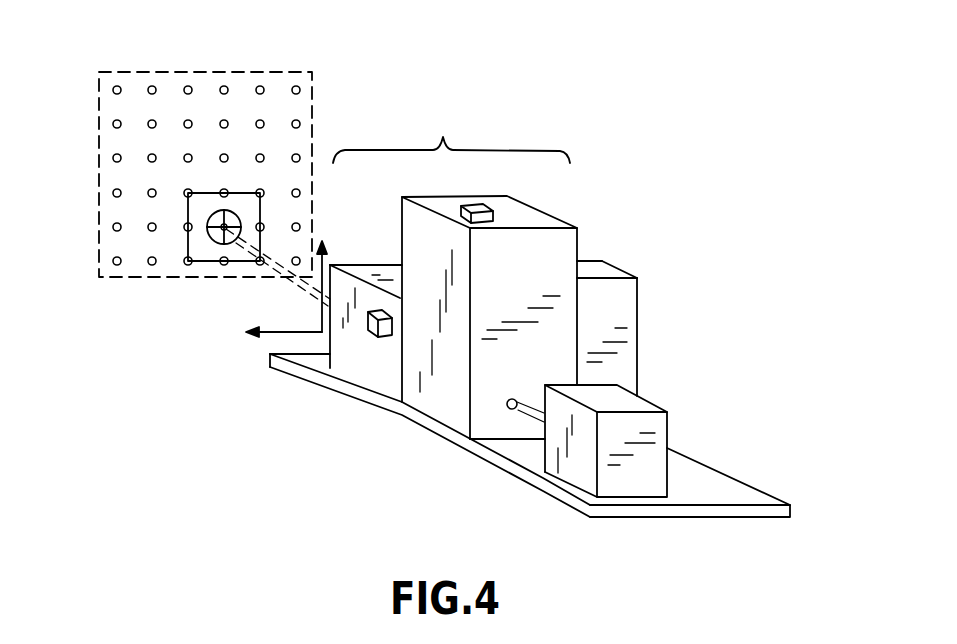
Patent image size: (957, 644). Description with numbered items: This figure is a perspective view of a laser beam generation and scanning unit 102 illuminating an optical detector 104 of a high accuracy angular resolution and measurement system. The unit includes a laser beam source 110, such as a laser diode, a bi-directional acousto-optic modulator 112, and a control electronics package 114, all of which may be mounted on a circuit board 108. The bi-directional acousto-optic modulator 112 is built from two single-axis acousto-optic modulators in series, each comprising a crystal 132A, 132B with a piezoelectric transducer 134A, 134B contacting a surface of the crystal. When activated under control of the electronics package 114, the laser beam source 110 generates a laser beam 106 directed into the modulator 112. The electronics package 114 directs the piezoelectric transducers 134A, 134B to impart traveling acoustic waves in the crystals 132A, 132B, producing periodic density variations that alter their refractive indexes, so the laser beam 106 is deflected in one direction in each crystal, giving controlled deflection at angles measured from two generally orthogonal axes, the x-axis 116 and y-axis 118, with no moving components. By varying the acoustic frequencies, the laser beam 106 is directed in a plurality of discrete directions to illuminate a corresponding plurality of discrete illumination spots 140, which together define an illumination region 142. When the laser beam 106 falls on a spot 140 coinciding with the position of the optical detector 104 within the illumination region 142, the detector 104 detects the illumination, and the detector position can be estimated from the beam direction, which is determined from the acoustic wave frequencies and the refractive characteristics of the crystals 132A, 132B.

The laser beam generation and scanning unit 102 is at (696, 189).
The optical detector 104 is at (196, 240).
The laser beam 106 is at (272, 268).
The circuit board 108 is at (750, 495).
The laser beam source 110 is at (572, 476).
The bi-directional acousto-optic modulator 112 is at (451, 135).
The control electronics package 114 is at (628, 307).
The x-axis 116 is at (297, 331).
The y-axis 118 is at (330, 261).
The crystal 132A is at (538, 213).
The crystal 132B is at (374, 363).
The piezoelectric transducer 134A is at (472, 204).
The piezoelectric transducer 134B is at (370, 334).
The illumination spot 140 is at (228, 224).
The illumination region 142 is at (153, 72).